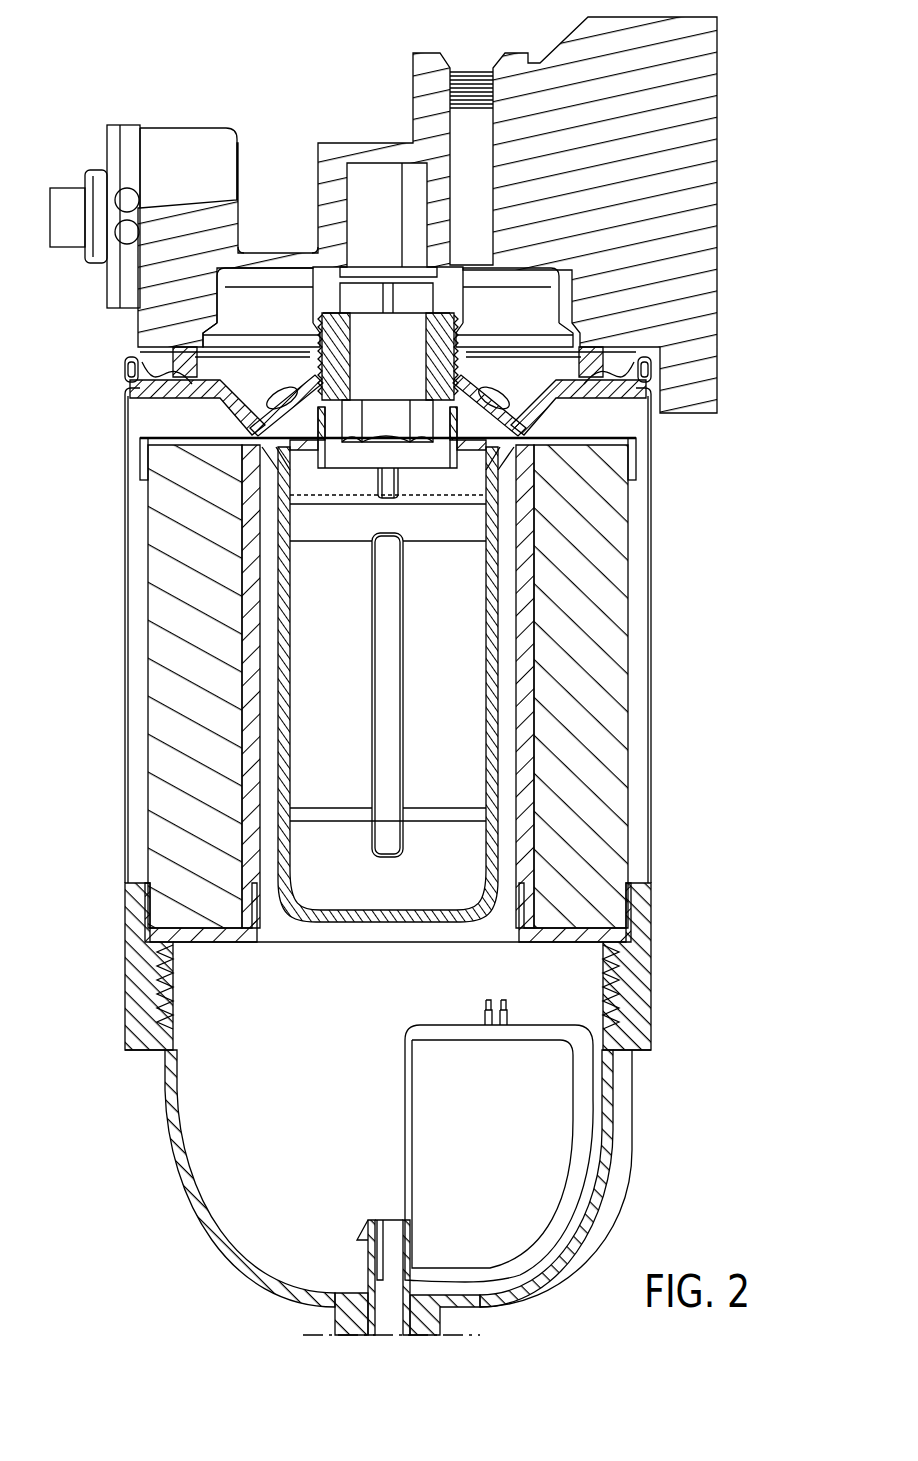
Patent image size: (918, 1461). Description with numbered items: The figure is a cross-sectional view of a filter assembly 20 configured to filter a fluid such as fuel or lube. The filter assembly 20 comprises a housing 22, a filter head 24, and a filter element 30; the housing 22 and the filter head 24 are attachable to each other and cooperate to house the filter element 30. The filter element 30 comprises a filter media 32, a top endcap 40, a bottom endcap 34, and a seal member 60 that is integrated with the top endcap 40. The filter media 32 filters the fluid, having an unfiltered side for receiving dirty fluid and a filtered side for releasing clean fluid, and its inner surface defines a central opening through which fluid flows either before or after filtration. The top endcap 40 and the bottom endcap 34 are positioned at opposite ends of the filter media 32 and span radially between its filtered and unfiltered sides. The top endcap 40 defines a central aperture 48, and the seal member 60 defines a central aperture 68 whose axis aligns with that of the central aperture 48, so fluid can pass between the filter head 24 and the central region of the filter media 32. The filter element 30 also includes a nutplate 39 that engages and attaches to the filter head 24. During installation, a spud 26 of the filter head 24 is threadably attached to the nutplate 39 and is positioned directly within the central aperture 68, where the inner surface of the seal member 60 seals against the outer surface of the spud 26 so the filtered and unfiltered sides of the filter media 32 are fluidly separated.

The filter assembly 20 is at (728, 562).
The housing 22 is at (654, 839).
The filter head 24 is at (718, 191).
The spud 26 is at (306, 372).
The filter element 30 is at (431, 690).
The filter media 32 is at (607, 675).
The bottom endcap 34 is at (569, 946).
The nutplate 39 is at (170, 397).
The top endcap 40 is at (609, 435).
The central aperture 48 is at (542, 449).
The seal member 60 is at (311, 479).
The central aperture 68 is at (432, 452).